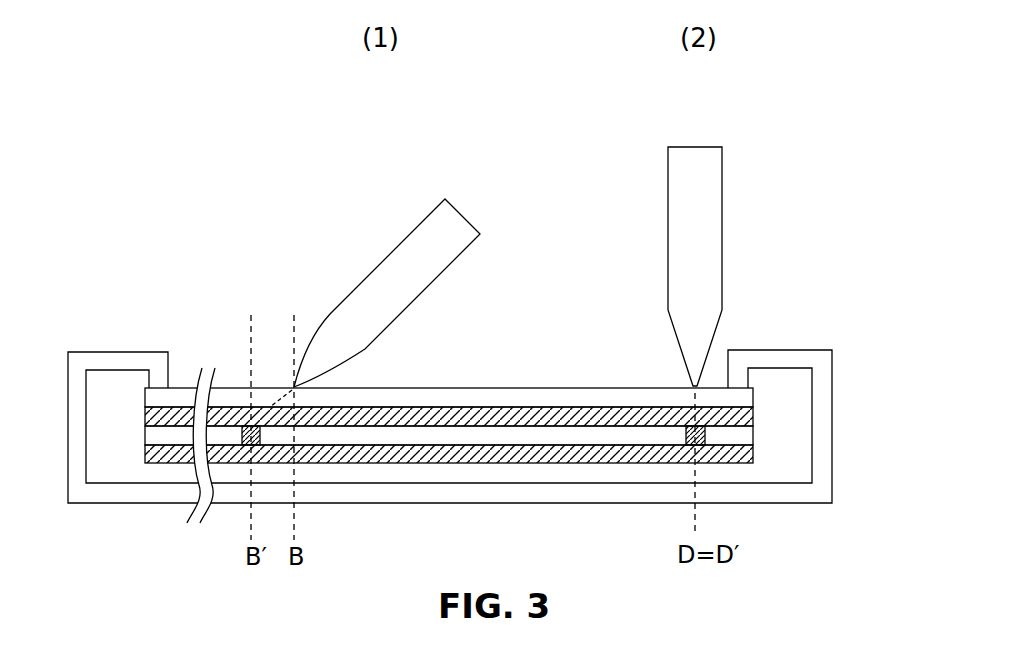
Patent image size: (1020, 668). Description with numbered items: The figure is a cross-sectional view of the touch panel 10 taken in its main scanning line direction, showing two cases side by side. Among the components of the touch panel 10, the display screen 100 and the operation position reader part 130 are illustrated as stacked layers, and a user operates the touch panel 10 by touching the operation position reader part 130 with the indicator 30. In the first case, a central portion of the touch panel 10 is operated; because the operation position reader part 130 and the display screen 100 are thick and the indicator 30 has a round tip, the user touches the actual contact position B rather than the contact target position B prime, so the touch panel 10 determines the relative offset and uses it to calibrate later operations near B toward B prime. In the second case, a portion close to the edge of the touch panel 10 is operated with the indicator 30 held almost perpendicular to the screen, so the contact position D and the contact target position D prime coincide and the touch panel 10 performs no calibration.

The touch panel 10 is at (832, 425).
The indicator 30 is at (466, 215).
The display screen 100 is at (757, 405).
The operation position reader part 130 is at (487, 388).